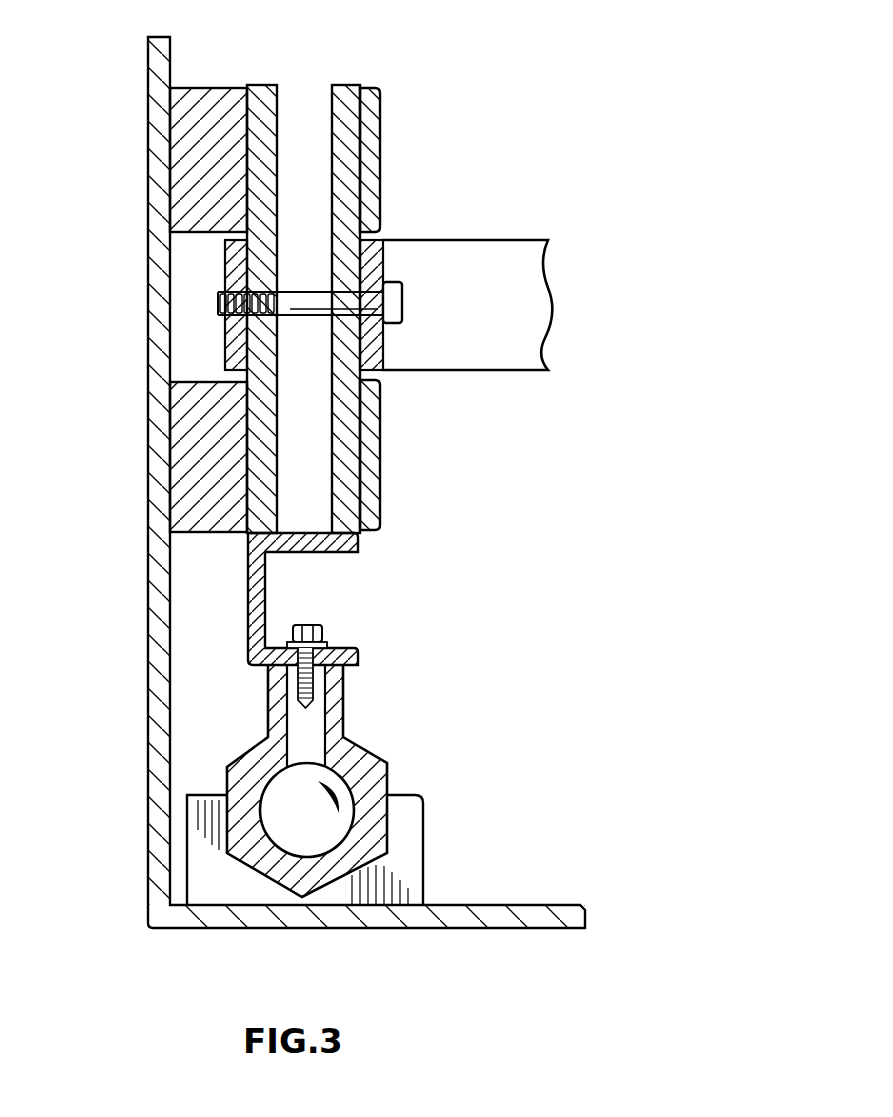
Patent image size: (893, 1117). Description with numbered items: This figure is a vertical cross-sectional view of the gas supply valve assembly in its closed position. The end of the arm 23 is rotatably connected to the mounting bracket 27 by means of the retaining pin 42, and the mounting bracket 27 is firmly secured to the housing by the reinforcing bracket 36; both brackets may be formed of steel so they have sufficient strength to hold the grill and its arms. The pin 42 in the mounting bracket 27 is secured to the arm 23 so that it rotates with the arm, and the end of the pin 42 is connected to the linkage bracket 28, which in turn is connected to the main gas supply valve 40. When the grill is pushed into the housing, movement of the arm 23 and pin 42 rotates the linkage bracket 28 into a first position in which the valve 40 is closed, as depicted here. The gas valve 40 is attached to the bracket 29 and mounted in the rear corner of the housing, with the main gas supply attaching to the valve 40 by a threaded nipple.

The arm 23 is at (475, 277).
The mounting bracket 27 is at (202, 173).
The linkage bracket 28 is at (248, 601).
The bracket 29 is at (402, 833).
The reinforcing bracket 36 is at (148, 699).
The main gas supply valve 40 is at (372, 713).
The retaining pin 42 is at (347, 84).